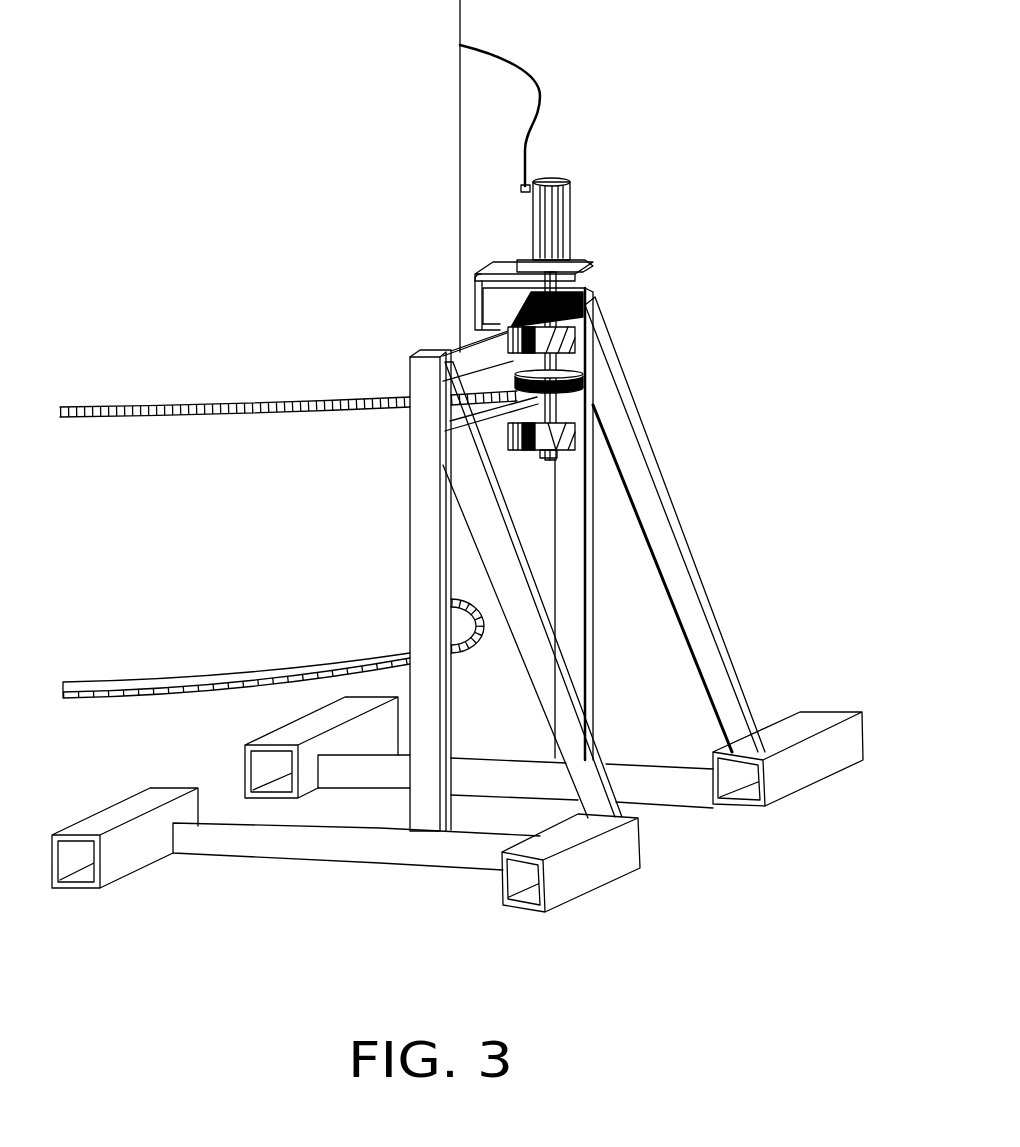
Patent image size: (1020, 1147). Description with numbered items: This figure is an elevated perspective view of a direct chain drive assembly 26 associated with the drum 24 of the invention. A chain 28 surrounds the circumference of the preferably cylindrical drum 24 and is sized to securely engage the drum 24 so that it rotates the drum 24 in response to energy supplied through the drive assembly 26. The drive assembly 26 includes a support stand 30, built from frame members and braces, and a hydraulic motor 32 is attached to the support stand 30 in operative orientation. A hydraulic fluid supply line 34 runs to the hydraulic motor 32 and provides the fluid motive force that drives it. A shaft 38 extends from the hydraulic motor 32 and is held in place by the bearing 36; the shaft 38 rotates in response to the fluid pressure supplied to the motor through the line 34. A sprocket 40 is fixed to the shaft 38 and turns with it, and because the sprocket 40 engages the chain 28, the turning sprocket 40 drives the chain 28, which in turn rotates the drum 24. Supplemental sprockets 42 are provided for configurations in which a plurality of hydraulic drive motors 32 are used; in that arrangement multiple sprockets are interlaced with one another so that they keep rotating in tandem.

The drum 24 is at (200, 524).
The drive assembly 26 is at (632, 246).
The chain 28 is at (183, 407).
The support stand 30 is at (410, 548).
The hydraulic motor 32 is at (570, 182).
The hydraulic fluid supply line 34 is at (538, 90).
The bearing 36 is at (508, 343).
The shaft 38 is at (556, 408).
The sprocket 40 is at (517, 393).
The supplemental sprockets 42 is at (585, 305).